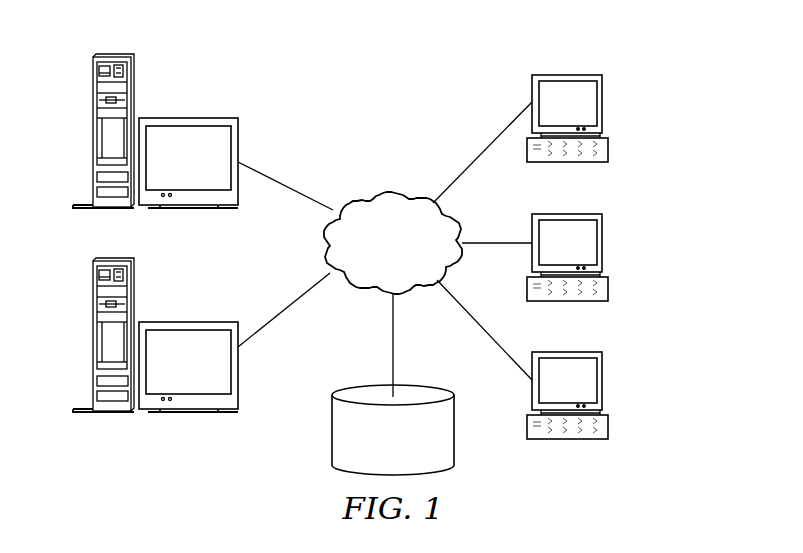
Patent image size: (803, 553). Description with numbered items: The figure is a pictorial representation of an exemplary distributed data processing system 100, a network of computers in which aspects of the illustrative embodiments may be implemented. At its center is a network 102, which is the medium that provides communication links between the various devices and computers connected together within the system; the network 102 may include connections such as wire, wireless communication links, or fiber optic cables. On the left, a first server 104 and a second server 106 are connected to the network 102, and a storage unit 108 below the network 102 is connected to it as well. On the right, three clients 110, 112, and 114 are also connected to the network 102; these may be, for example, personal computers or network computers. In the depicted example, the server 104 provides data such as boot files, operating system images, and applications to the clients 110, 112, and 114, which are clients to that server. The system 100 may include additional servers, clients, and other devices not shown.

The distributed data processing system 100 is at (446, 78).
The network 102 is at (364, 193).
The server 104 is at (92, 133).
The server 106 is at (92, 343).
The storage unit 108 is at (332, 442).
The client 110 is at (603, 105).
The client 112 is at (603, 244).
The client 114 is at (603, 380).